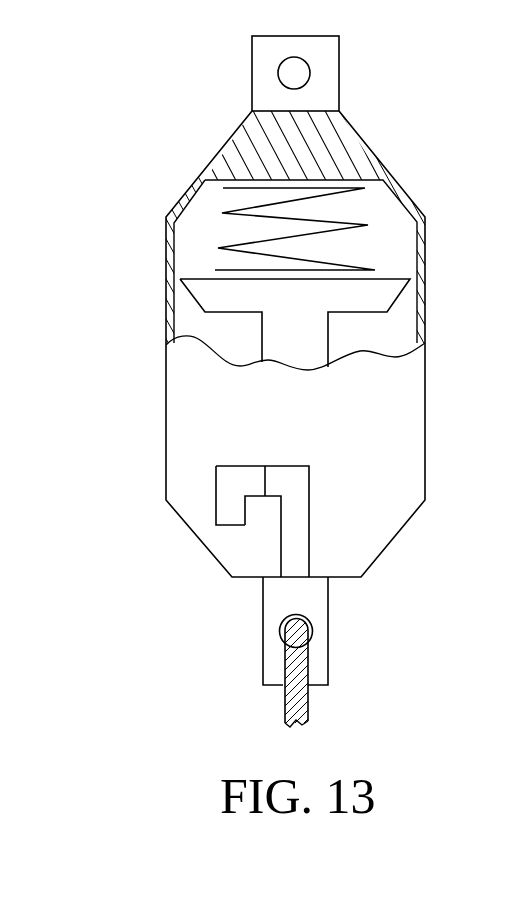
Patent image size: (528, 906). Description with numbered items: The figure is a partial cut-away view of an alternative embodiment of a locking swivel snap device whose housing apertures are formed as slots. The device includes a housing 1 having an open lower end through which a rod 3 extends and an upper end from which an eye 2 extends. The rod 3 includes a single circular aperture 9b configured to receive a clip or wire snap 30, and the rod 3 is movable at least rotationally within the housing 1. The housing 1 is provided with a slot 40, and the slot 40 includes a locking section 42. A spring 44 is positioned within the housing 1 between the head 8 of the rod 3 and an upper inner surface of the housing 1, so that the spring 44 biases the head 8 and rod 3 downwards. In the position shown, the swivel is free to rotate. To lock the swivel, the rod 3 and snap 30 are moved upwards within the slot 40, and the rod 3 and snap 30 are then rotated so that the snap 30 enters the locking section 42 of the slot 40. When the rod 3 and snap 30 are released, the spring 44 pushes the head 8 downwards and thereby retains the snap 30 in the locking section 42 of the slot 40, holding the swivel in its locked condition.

The housing 1 is at (134, 344).
The eye 2 is at (314, 63).
The rod 3 is at (258, 609).
The head 8 is at (385, 292).
The single circular aperture 9b is at (312, 621).
The wire snap 30 is at (300, 706).
The slot 40 is at (313, 522).
The locking section 42 is at (230, 515).
The spring 44 is at (345, 222).